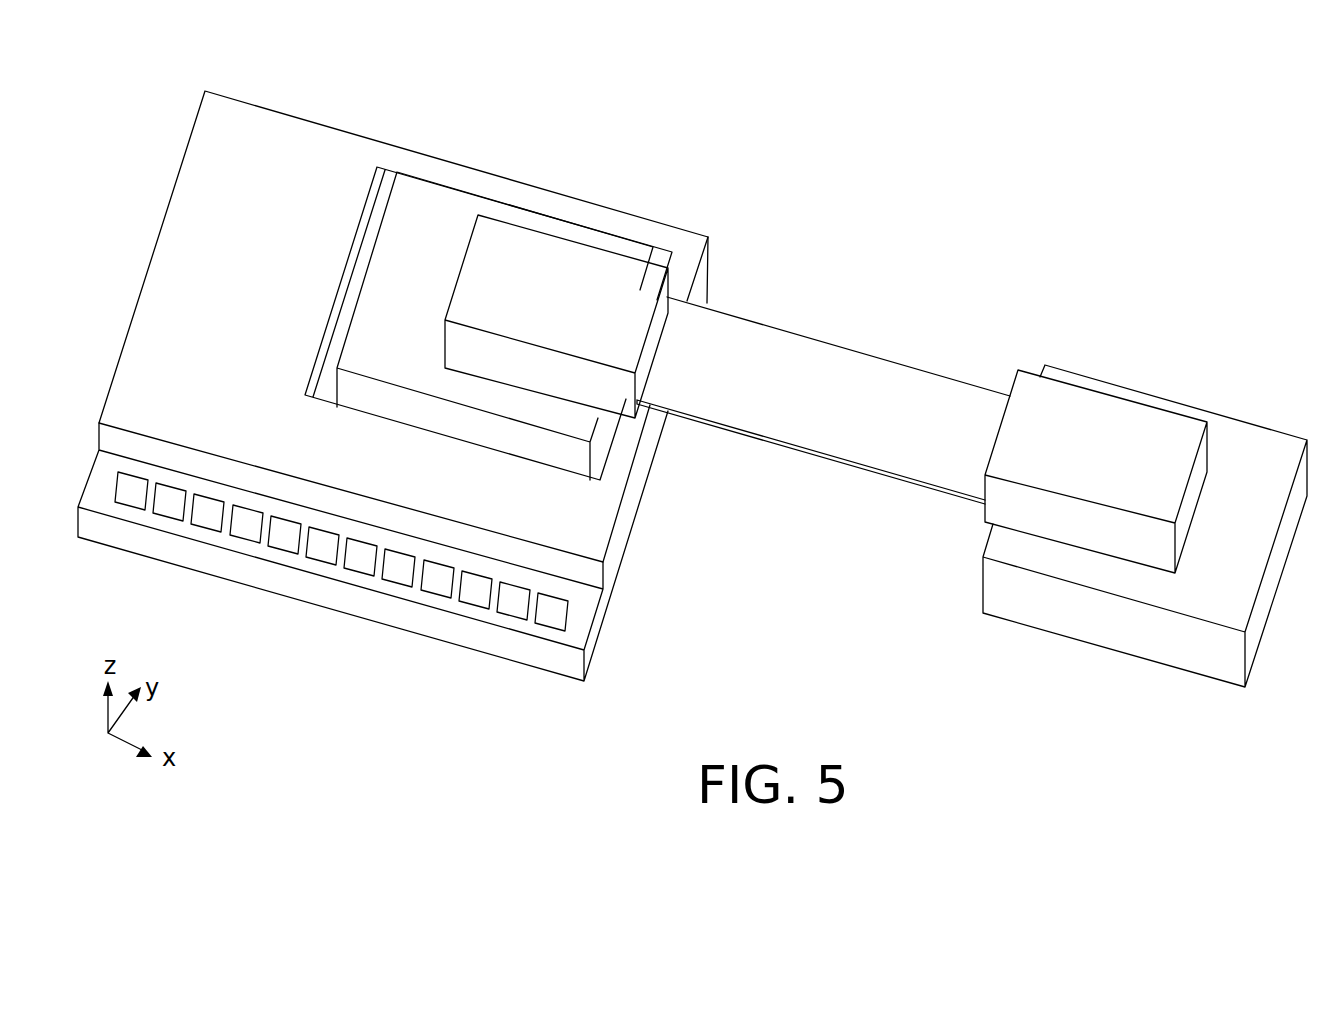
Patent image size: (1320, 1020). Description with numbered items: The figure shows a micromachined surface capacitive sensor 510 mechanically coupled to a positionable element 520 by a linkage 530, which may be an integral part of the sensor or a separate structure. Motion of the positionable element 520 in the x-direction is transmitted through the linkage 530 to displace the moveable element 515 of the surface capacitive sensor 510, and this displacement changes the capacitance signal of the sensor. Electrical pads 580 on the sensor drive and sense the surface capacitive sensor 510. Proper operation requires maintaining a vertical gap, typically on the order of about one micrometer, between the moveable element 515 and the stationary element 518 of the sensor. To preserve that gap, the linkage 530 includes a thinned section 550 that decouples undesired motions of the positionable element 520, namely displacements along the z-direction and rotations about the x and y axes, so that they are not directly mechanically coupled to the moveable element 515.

The micromachined surface capacitive sensor 510 is at (388, 366).
The moveable element 515 is at (430, 207).
The stationary element 518 is at (292, 145).
The positionable element 520 is at (1252, 450).
The linkage 530 is at (823, 387).
The thinned section 550 is at (843, 400).
The electrical pads 580 is at (288, 545).